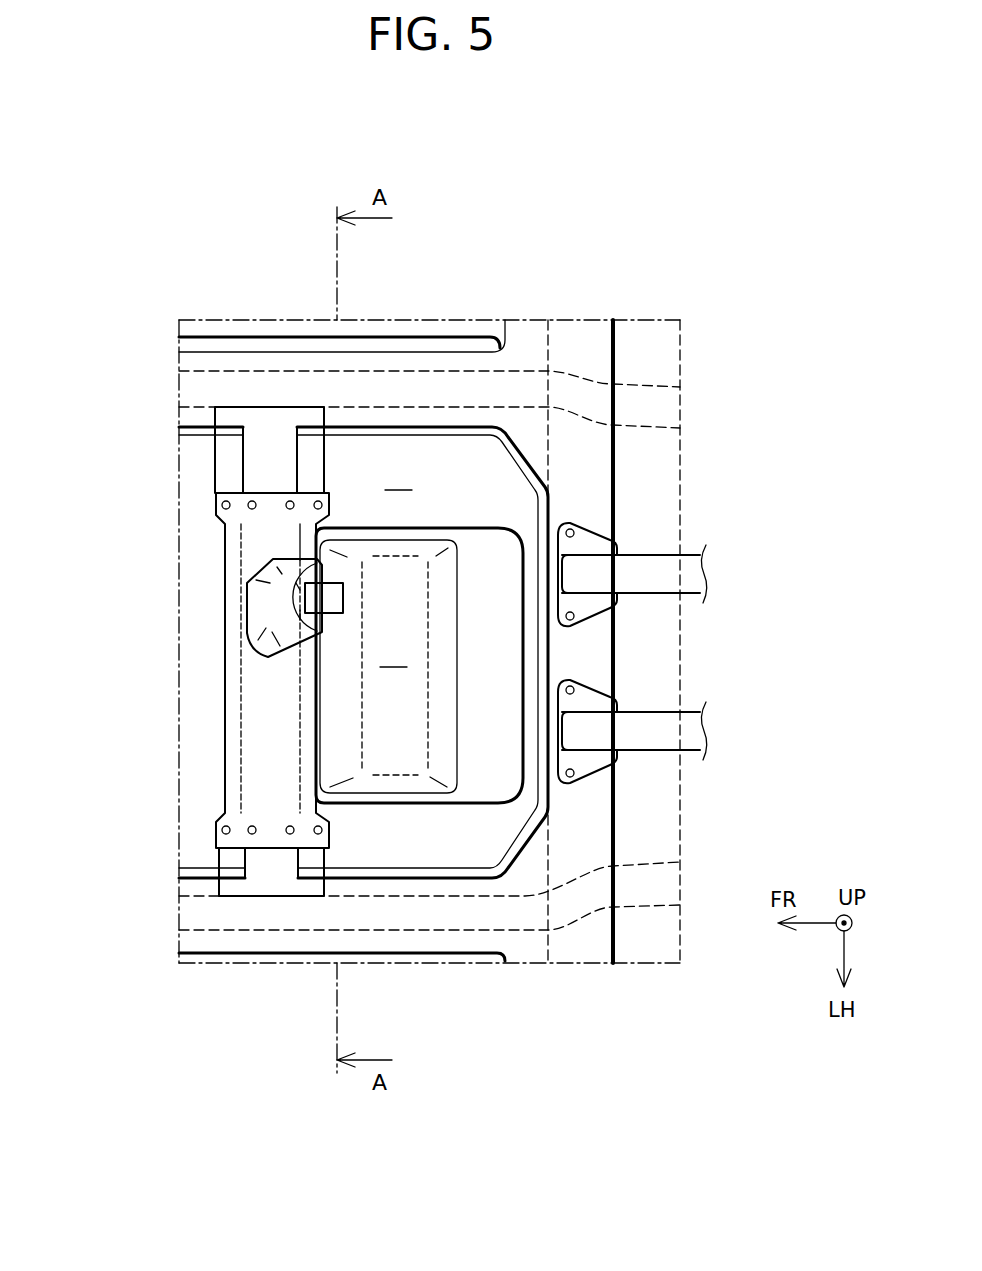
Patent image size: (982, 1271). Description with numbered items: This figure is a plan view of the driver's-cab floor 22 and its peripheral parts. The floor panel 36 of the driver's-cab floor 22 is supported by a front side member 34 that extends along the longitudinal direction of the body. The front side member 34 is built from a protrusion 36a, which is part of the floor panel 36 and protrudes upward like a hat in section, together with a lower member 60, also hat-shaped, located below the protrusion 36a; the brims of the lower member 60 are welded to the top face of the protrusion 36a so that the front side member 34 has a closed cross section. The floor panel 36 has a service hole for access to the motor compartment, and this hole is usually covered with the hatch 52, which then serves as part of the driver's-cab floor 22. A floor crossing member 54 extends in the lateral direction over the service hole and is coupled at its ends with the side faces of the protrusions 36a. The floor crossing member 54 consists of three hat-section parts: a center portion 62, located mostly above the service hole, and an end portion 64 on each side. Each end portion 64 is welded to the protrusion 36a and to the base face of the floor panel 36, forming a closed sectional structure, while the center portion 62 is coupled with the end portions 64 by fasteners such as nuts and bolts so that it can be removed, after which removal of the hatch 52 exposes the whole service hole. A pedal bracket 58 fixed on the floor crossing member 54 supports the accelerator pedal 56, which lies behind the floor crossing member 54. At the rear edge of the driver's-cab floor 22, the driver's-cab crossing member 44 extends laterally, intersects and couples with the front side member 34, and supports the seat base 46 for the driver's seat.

The driver's-cab floor 22 is at (567, 306).
The front side member 34 is at (410, 385).
The floor panel 36 is at (363, 652).
The protrusion 36a is at (297, 385).
The driver's-cab crossing member 44 is at (585, 945).
The seat base 46 is at (665, 761).
The hatch 52 is at (419, 665).
The floor crossing member 54 is at (212, 692).
The accelerator pedal 56 is at (318, 600).
The pedal bracket 58 is at (262, 604).
The lower member 60 is at (465, 390).
The center portion 62 is at (268, 738).
The end portion 64 is at (252, 462).